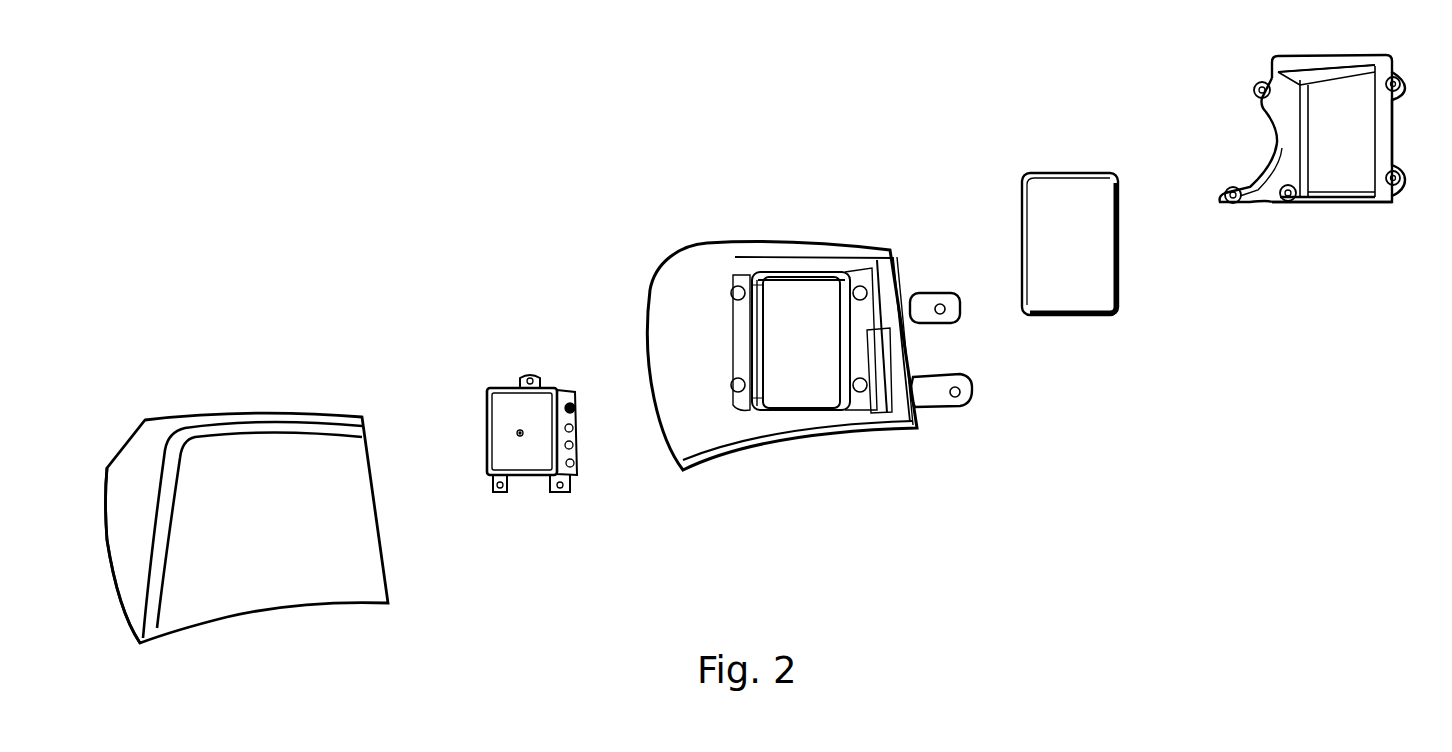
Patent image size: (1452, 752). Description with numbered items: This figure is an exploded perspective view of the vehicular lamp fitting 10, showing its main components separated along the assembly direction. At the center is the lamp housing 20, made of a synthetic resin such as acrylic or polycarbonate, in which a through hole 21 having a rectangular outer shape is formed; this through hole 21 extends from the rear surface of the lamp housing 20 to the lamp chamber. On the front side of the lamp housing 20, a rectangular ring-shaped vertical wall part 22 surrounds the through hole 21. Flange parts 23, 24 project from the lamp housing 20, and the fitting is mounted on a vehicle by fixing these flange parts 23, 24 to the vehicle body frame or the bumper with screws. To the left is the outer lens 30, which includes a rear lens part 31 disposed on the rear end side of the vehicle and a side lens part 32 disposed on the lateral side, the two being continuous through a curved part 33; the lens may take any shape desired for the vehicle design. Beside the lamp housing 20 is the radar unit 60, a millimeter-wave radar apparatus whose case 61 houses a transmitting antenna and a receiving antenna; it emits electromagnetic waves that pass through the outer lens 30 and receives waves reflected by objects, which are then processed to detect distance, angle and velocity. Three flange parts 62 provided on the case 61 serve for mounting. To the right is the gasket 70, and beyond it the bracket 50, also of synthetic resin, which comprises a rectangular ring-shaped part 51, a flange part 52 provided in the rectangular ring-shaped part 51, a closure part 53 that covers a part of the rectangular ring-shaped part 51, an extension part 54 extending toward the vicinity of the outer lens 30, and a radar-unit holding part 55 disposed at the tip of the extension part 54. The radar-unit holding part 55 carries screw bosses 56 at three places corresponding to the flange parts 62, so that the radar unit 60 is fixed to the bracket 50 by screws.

The vehicular lamp fitting 10 is at (624, 142).
The lamp housing 20 is at (793, 241).
The through hole 21 is at (768, 312).
The vertical wall part 22 is at (760, 355).
The flange part 23 is at (963, 309).
The flange part 24 is at (975, 392).
The outer lens 30 is at (291, 416).
The rear lens part 31 is at (246, 438).
The side lens part 32 is at (127, 547).
The curved part 33 is at (171, 503).
The bracket 50 is at (1338, 55).
The rectangular ring-shaped part 51 is at (1283, 62).
The flange part 52 is at (1395, 130).
The closure part 53 is at (1268, 143).
The extension part 54 is at (1341, 201).
The radar-unit holding part 55 is at (1262, 112).
The screw boss 56 is at (1261, 82).
The radar unit 60 is at (502, 388).
The case 61 is at (566, 389).
The flange part 62 is at (531, 375).
The gasket 70 is at (1070, 171).